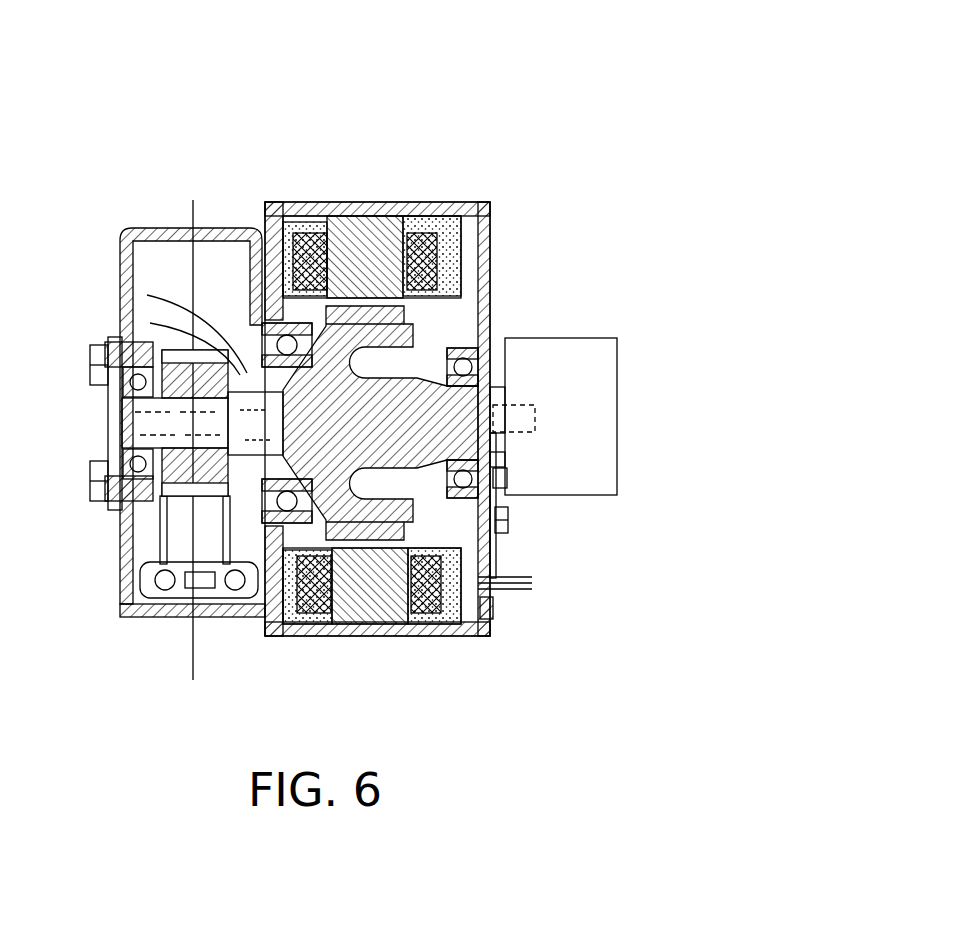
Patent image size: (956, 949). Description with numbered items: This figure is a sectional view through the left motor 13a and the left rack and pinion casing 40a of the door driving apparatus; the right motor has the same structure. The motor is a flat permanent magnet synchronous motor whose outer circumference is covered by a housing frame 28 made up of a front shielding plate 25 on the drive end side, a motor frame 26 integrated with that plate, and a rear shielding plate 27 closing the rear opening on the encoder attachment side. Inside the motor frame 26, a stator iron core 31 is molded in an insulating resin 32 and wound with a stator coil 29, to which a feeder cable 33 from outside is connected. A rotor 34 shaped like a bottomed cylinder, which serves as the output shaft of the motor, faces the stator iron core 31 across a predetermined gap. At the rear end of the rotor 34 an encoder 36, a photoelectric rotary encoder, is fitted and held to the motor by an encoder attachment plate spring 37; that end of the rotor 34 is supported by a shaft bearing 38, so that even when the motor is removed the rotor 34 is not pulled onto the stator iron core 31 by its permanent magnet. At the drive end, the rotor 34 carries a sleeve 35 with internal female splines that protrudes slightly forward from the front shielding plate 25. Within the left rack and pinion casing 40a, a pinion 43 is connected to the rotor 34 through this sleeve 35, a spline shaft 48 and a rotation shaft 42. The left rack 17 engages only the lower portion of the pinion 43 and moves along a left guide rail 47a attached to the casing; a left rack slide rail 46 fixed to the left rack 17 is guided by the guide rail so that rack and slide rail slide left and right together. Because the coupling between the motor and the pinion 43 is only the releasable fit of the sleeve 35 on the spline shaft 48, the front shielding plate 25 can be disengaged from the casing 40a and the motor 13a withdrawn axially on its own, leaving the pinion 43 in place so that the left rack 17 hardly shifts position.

The left motor 13a is at (542, 116).
The housing frame 28 is at (492, 108).
The front shielding plate 25 is at (265, 203).
The motor frame 26 is at (380, 203).
The rear shielding plate 27 is at (490, 205).
The stator coil 29 is at (440, 262).
The stator iron core 31 is at (462, 318).
The insulating resin 32 is at (465, 232).
The feeder cable 33 is at (520, 598).
The rotor 34 is at (497, 553).
The encoder 36 is at (617, 372).
The encoder attachment plate spring 37 is at (507, 488).
The shaft bearing 38 is at (497, 460).
The sleeve 35 is at (147, 295).
The left rack and pinion casing 40a is at (150, 218).
The rotation shaft 42 is at (177, 545).
The pinion 43 is at (160, 545).
The left rack 17 is at (130, 548).
The left rack slide rail 46 is at (150, 580).
The left guide rail 47a is at (118, 618).
The spline shaft 48 is at (150, 323).